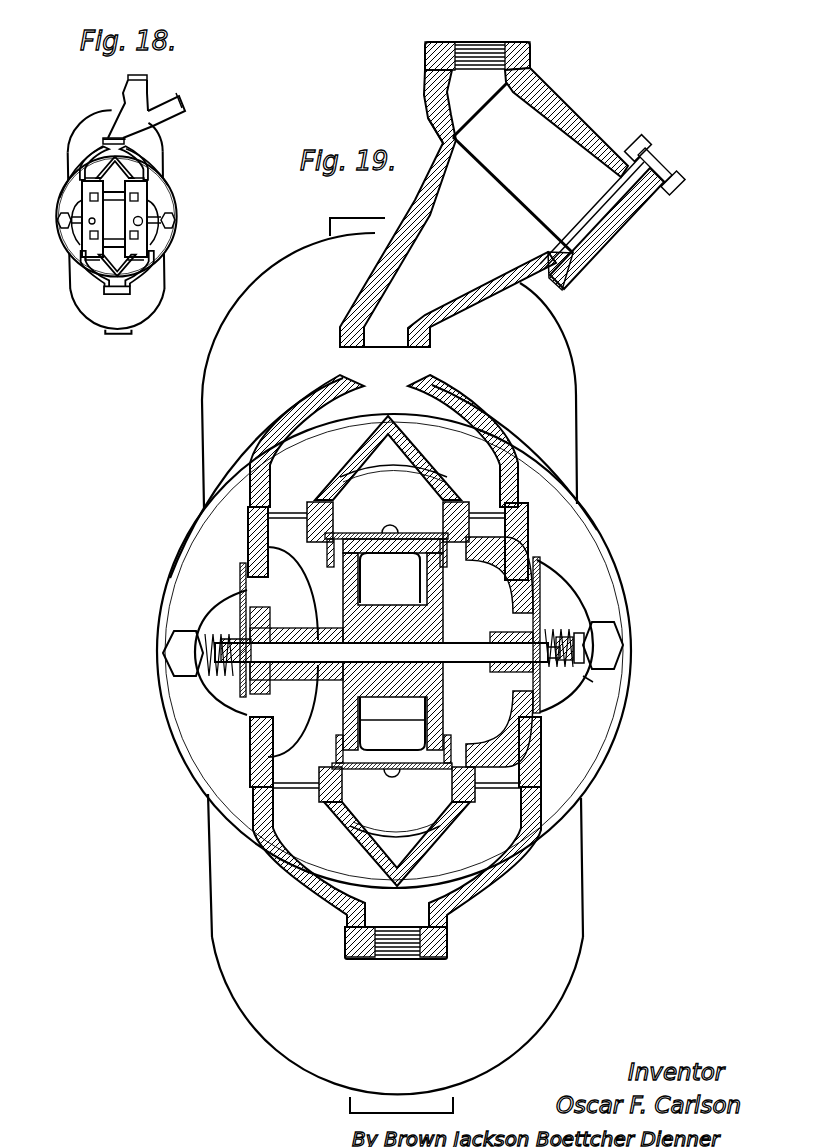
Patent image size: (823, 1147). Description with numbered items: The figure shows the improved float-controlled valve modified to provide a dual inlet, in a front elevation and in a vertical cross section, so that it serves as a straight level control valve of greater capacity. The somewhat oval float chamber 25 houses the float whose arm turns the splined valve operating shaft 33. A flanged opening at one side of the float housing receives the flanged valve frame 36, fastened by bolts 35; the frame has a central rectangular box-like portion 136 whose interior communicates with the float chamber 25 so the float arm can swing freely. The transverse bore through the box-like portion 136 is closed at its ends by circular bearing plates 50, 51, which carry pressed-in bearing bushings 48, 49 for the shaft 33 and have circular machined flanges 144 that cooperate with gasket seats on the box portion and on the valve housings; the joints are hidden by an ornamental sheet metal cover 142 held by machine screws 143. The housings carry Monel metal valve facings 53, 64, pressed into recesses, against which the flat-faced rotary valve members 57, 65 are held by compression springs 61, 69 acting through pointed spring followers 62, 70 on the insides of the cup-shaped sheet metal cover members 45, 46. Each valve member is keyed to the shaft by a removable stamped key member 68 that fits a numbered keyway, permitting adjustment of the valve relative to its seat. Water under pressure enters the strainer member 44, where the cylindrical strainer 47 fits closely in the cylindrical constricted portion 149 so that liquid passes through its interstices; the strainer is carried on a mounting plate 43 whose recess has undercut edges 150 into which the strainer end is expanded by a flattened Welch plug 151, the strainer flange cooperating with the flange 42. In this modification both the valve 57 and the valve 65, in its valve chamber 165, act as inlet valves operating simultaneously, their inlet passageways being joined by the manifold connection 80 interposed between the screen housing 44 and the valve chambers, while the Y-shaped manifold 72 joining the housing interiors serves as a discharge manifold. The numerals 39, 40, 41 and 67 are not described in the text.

In FIG. 19, the float chamber 25 is at (574, 347).
In FIG. 18, the float chamber 25 is at (88, 127).
In FIG. 19, the valve operating shaft 33 is at (470, 656).
In FIG. 19, the bolts 35 is at (163, 653).
In FIG. 18, the bolts 35 is at (59, 218).
In FIG. 19, the flanged valve frame 36 is at (583, 528).
In FIG. 18, the flanged valve frame 36 is at (68, 255).
In FIG. 18, the rocker arm 39 is at (78, 193).
In FIG. 18, the rocker arm 40 is at (150, 198).
In FIG. 18, the central block 41 is at (140, 226).
In FIG. 19, the flange 42 is at (250, 528).
In FIG. 19, the mounting plate 43 is at (648, 203).
In FIG. 18, the mounting plate 43 is at (183, 116).
In FIG. 19, the strainer member 44 is at (378, 270).
In FIG. 18, the strainer member 44 is at (150, 99).
In FIG. 18, the cup-shaped sheet metal cover member 45 is at (68, 228).
In FIG. 18, the cup-shaped sheet metal cover member 46 is at (176, 214).
In FIG. 19, the cylindrical strainer 47 is at (553, 118).
In FIG. 19, the bearing bushing 48 is at (343, 671).
In FIG. 19, the bearing bushing 49 is at (423, 674).
In FIG. 19, the circular bearing plate 50 is at (342, 610).
In FIG. 19, the circular bearing plate 51 is at (426, 596).
In FIG. 19, the valve facing 53 is at (263, 610).
In FIG. 19, the rotary valve member 57 is at (240, 610).
In FIG. 19, the compression spring 61 is at (216, 680).
In FIG. 19, the spring follower 62 is at (193, 674).
In FIG. 19, the valve facing 64 is at (540, 592).
In FIG. 19, the rotary valve member 65 is at (541, 609).
In FIG. 19, the spring 67 is at (560, 666).
In FIG. 19, the key member 68 is at (547, 642).
In FIG. 19, the compression spring 69 is at (584, 678).
In FIG. 19, the spring follower 70 is at (584, 626).
In FIG. 19, the Y-shaped manifold 72 is at (348, 883).
In FIG. 18, the Y-shaped manifold 72 is at (106, 278).
In FIG. 19, the manifold connection 80 is at (420, 410).
In FIG. 18, the manifold connection 80 is at (124, 161).
In FIG. 19, the box-like portion 136 is at (366, 533).
In FIG. 18, the box-like portion 136 is at (146, 233).
In FIG. 19, the ornamental sheet metal cover 142 is at (421, 796).
In FIG. 19, the machine screws 143 is at (388, 771).
In FIG. 19, the circular machined flanges 144 is at (327, 558).
In FIG. 19, the cylindrical constricted portion 149 is at (441, 143).
In FIG. 19, the undercut edges 150 is at (679, 166).
In FIG. 19, the Welch plug 151 is at (588, 247).
In FIG. 19, the valve chamber 165 is at (531, 551).